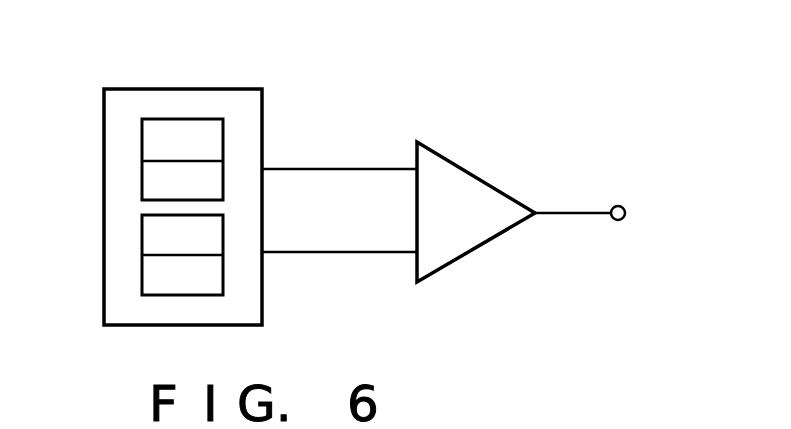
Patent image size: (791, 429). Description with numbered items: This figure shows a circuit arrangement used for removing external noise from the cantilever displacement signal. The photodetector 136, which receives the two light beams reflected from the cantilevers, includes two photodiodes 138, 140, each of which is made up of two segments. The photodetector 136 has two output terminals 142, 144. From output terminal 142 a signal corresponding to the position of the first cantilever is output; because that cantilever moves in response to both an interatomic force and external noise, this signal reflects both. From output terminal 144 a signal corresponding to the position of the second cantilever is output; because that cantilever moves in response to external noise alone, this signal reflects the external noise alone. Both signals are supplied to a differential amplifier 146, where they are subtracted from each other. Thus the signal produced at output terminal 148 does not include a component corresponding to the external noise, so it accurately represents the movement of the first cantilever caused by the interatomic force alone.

The photodetector 136 is at (196, 88).
The photodiode 138 is at (142, 162).
The photodiode 140 is at (142, 256).
The output terminal 142 is at (264, 168).
The output terminal 144 is at (264, 254).
The differential amplifier 146 is at (488, 182).
The output terminal 148 is at (621, 205).